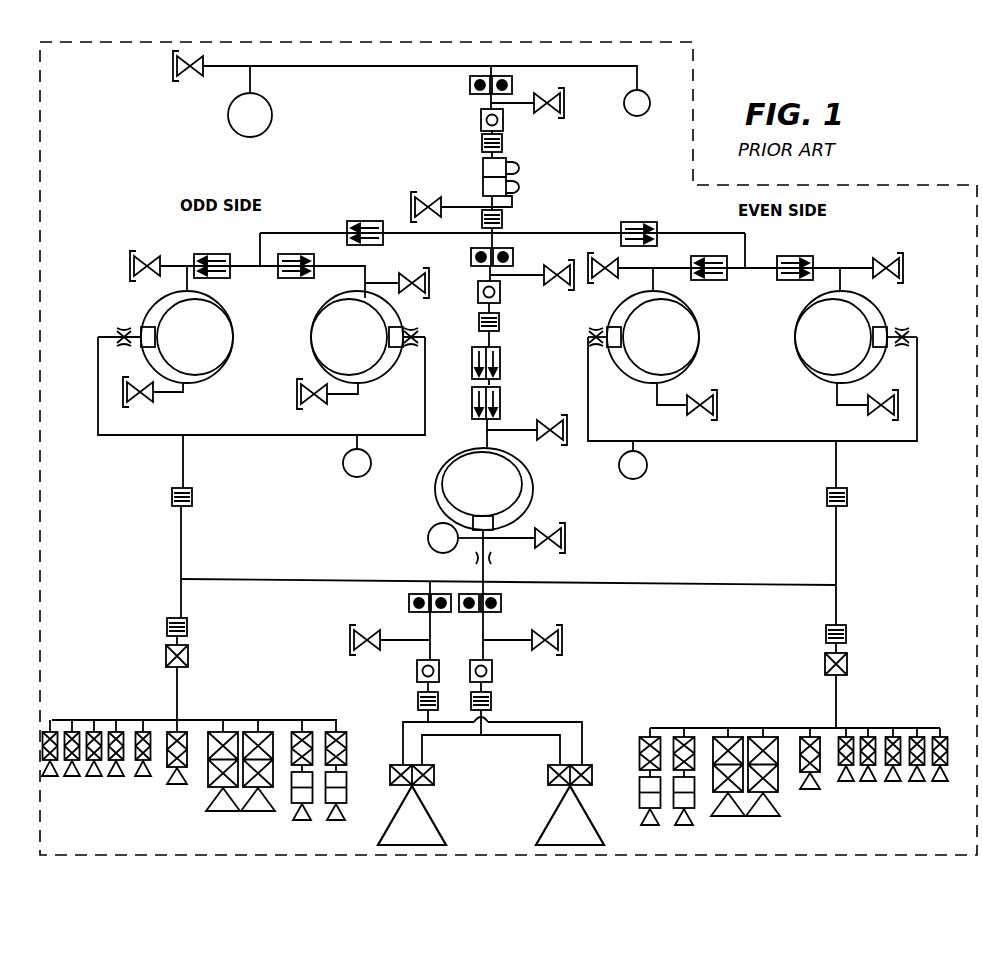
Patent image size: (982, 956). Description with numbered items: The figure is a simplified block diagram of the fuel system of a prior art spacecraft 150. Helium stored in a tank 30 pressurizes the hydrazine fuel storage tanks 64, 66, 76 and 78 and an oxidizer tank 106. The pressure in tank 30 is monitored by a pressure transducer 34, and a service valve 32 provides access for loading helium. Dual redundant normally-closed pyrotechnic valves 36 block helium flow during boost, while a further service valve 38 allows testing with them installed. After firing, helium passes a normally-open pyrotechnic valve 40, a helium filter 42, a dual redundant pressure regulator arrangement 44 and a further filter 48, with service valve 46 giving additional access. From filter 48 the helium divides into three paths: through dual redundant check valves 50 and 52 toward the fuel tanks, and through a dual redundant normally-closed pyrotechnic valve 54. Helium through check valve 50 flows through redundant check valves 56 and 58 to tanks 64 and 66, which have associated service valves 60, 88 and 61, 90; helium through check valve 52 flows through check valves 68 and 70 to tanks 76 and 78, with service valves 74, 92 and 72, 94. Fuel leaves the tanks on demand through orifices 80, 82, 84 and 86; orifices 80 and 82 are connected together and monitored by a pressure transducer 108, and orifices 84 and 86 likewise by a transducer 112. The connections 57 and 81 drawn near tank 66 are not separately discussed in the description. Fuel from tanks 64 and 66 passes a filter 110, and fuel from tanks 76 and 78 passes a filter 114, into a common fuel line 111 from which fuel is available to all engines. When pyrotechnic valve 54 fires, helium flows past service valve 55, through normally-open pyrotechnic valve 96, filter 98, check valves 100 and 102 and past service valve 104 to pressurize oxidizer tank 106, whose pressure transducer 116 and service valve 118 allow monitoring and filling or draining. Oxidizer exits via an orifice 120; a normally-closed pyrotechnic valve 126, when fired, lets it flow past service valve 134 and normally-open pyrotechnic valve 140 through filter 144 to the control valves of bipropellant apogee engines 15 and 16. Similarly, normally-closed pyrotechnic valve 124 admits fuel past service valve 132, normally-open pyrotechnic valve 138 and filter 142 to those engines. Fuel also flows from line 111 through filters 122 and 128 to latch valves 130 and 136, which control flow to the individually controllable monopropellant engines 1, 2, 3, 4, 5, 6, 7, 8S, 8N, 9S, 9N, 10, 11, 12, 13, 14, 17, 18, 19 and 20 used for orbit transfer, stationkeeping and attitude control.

The spacecraft 150 is at (700, 57).
The helium tank 30 is at (272, 112).
The service valve 32 is at (183, 80).
The pressure transducer 34 is at (647, 103).
The normally-closed pyrotechnic valves 36 is at (468, 88).
The service valve 38 is at (566, 103).
The normally-open pyrotechnic valve 40 is at (481, 124).
The helium filter 42 is at (503, 145).
The dual redundant pressure regulator arrangement 44 is at (520, 166).
The service valve 46 is at (440, 196).
The filter 48 is at (503, 219).
The dual redundant check valve 50 is at (370, 221).
The dual redundant check valve 52 is at (648, 212).
The normally-closed pyrotechnic valve 54 is at (513, 254).
The service valve 55 is at (565, 290).
The check valve 56 is at (215, 254).
The line 57 is at (357, 284).
The check valve 58 is at (293, 278).
The service valve 60 is at (155, 252).
The valve 61 is at (430, 280).
The fuel storage tank 64 is at (233, 332).
The fuel storage tank 66 is at (311, 342).
The check valve 68 is at (705, 280).
The check valve 70 is at (793, 256).
The service valve 72 is at (882, 256).
The service valve 74 is at (612, 282).
The fuel storage tank 76 is at (699, 336).
The fuel storage tank 78 is at (802, 311).
The orifice 80 is at (126, 325).
The line 81 is at (410, 350).
The orifice 82 is at (413, 325).
The orifice 84 is at (594, 345).
The orifice 86 is at (904, 327).
The service valve 88 is at (150, 402).
The service valve 90 is at (300, 402).
The service valve 92 is at (690, 416).
The service valve 94 is at (868, 416).
The normally-open pyrotechnic valve 96 is at (478, 288).
The filter 98 is at (499, 322).
The check valve 100 is at (500, 361).
The check valve 102 is at (500, 397).
The service valve 104 is at (566, 440).
The oxidizer tank 106 is at (533, 489).
The pressure transducer 108 is at (355, 470).
The filter 110 is at (192, 497).
The common fuel line 111 is at (340, 556).
The pressure transducer 112 is at (649, 460).
The filter 114 is at (827, 492).
The pressure transducer 116 is at (428, 538).
The service valve 118 is at (566, 538).
The orifice 120 is at (493, 558).
The filter 122 is at (166, 622).
The normally-closed pyrotechnic valve 124 is at (408, 603).
The normally-closed pyrotechnic valve 126 is at (501, 603).
The filter 128 is at (826, 633).
The latch valve 130 is at (188, 664).
The service valve 132 is at (349, 640).
The service valve 134 is at (539, 640).
The latch valve 136 is at (825, 665).
The normally-open pyrotechnic valve 138 is at (417, 671).
The normally-open pyrotechnic valve 140 is at (492, 674).
The filter 142 is at (418, 700).
The filter 144 is at (491, 701).
The monopropellant engine 1 is at (302, 785).
The monopropellant engine 2 is at (684, 790).
The monopropellant engine 3 is at (336, 785).
The monopropellant engine 4 is at (650, 790).
The monopropellant engine 5 is at (50, 764).
The monopropellant engine 6 is at (940, 769).
The monopropellant engine 7 is at (72, 764).
The monopropellant engine 8S is at (892, 769).
The monopropellant engine 8N is at (916, 769).
The monopropellant engine 9S is at (93, 764).
The monopropellant engine 9N is at (115, 764).
The monopropellant engine 10 is at (869, 769).
The monopropellant engine 11 is at (144, 764).
The monopropellant engine 12 is at (847, 769).
The monopropellant engine 13 is at (177, 768).
The monopropellant engine 14 is at (810, 774).
The bipropellant apogee engine 15 is at (418, 805).
The bipropellant apogee engine 16 is at (563, 805).
The monopropellant engine 17 is at (223, 781).
The monopropellant engine 18 is at (763, 786).
The monopropellant engine 19 is at (258, 781).
The monopropellant engine 20 is at (728, 786).